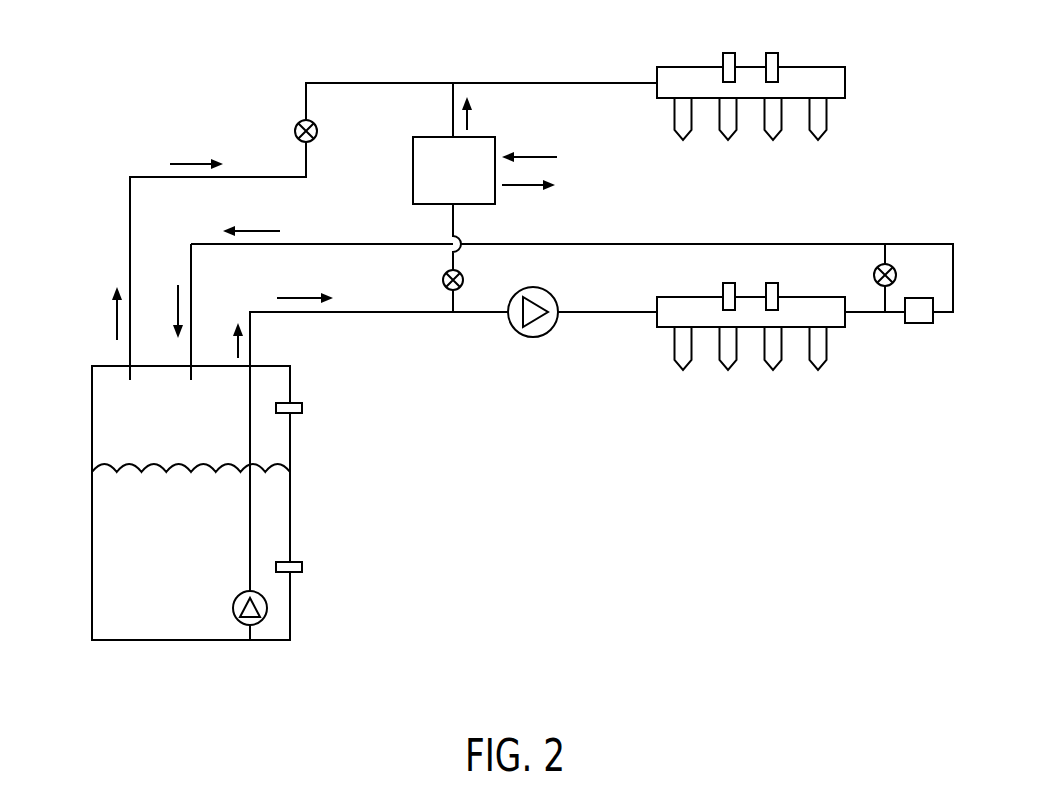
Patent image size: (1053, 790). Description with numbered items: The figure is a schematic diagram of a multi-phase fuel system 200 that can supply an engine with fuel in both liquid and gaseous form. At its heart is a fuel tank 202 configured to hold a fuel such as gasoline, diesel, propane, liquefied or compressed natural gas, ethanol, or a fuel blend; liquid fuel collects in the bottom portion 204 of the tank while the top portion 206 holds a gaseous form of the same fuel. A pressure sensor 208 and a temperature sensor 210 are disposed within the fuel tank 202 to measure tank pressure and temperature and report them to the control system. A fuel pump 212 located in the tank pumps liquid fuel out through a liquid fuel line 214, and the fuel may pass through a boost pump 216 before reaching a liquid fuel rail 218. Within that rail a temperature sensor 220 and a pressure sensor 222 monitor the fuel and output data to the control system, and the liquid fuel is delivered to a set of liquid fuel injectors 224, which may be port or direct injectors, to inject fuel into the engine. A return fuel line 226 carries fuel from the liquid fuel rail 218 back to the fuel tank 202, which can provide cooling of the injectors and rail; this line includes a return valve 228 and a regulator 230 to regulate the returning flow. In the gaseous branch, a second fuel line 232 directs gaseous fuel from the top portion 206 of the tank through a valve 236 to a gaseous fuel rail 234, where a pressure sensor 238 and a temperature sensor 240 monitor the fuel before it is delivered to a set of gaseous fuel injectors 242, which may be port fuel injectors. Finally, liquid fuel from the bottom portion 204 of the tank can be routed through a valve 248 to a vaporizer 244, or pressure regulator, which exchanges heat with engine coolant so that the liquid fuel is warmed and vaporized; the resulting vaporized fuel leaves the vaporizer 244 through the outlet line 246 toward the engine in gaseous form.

The multi-phase fuel system 200 is at (960, 70).
The fuel tank 202 is at (92, 392).
The bottom portion 204 is at (193, 540).
The top portion 206 is at (193, 431).
The pressure sensor 208 is at (303, 408).
The temperature sensor 210 is at (303, 567).
The fuel pump 212 is at (232, 610).
The liquid fuel line 214 is at (365, 313).
The boost pump 216 is at (532, 337).
The liquid fuel rail 218 is at (845, 320).
The temperature sensor 220 is at (727, 283).
The pressure sensor 222 is at (773, 283).
The liquid fuel injectors 224 is at (828, 345).
The return fuel line 226 is at (578, 244).
The return valve 228 is at (876, 277).
The regulator 230 is at (920, 325).
The second fuel line 232 is at (128, 216).
The gaseous fuel rail 234 is at (845, 90).
The valve 236 is at (293, 130).
The pressure sensor 238 is at (727, 53).
The temperature sensor 240 is at (773, 53).
The gaseous fuel injectors 242 is at (828, 115).
The vaporizer 244 is at (468, 204).
The conduit 246 is at (452, 120).
The valve 248 is at (443, 280).